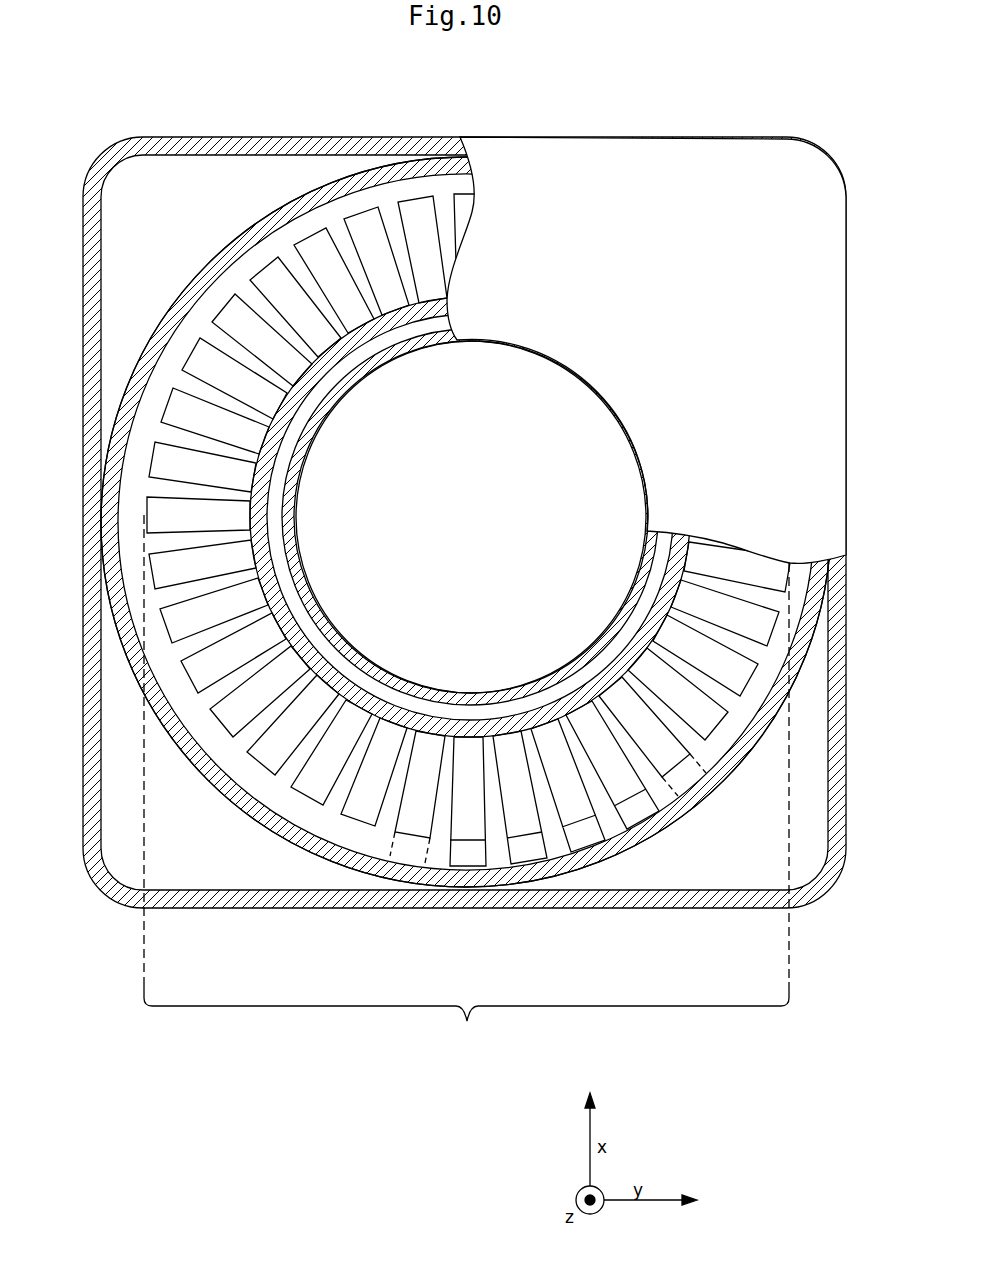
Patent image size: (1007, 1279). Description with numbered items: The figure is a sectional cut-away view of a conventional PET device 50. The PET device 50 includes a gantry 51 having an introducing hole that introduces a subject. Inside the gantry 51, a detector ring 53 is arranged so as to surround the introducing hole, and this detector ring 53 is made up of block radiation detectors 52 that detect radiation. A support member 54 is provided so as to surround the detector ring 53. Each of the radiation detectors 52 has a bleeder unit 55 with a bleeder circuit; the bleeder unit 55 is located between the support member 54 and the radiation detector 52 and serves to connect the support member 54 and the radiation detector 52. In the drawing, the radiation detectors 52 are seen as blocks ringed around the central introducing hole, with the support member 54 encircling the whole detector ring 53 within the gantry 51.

The PET device 50 is at (652, 108).
The gantry 51 is at (697, 349).
The radiation detector 52 is at (391, 781).
The detector ring 53 is at (466, 787).
The support member 54 is at (234, 808).
The bleeder unit 55 is at (661, 804).